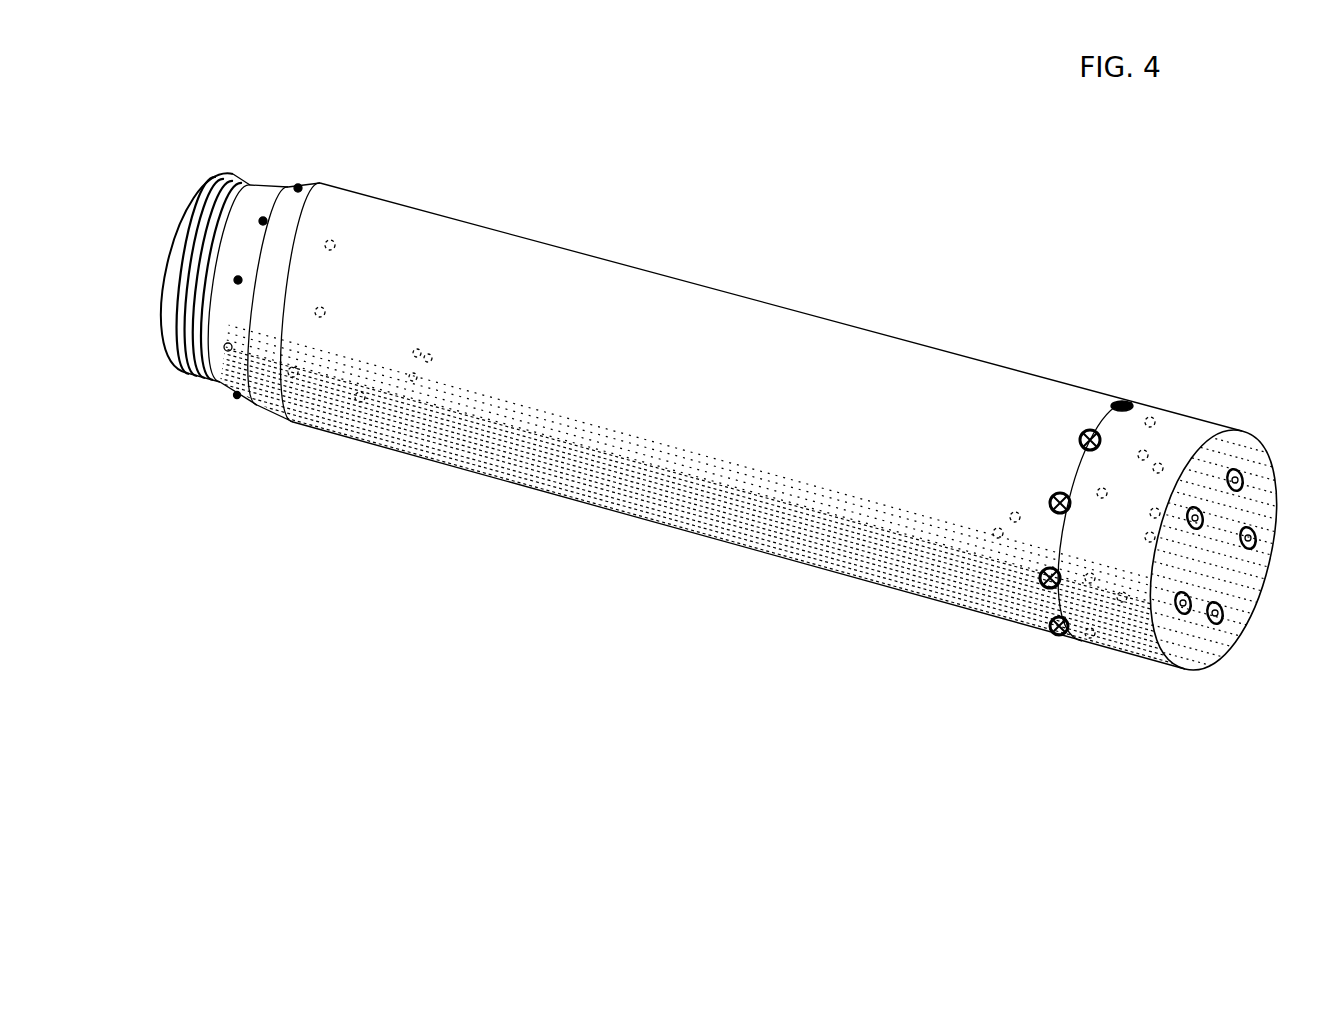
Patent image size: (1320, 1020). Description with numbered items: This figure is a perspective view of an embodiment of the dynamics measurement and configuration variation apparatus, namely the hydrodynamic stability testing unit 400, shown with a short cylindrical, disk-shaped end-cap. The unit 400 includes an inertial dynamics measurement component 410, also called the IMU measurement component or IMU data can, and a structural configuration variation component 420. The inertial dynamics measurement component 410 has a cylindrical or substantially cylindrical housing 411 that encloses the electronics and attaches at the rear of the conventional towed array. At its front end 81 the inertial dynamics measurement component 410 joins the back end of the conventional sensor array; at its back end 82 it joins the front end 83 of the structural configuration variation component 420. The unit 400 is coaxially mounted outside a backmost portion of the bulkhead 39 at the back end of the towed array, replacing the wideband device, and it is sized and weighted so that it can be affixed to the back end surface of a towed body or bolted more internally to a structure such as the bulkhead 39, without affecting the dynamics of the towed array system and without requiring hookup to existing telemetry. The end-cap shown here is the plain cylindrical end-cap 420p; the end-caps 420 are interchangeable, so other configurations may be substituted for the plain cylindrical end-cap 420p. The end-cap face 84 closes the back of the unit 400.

The bulkhead 39 is at (287, 458).
The front end 81 is at (362, 173).
The back end 82 is at (1143, 387).
The front end 83 is at (1086, 518).
The end cap face 84 is at (1268, 600).
The hydrodynamic stability testing unit 400 is at (1155, 803).
The inertial dynamics measurement component 410 is at (1078, 673).
The cylindrical housing 411 is at (630, 310).
The structural configuration variation component 420 is at (1090, 677).
The plain cylindrical end-cap 420p is at (1110, 522).